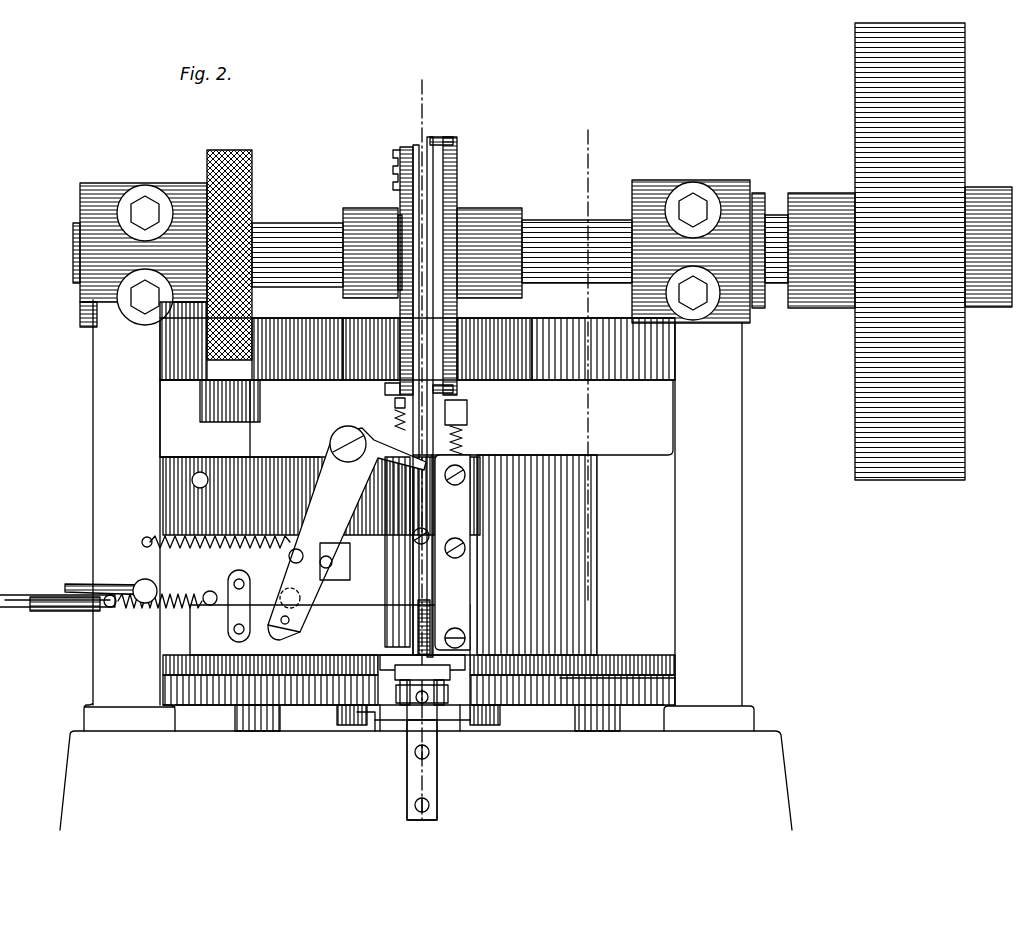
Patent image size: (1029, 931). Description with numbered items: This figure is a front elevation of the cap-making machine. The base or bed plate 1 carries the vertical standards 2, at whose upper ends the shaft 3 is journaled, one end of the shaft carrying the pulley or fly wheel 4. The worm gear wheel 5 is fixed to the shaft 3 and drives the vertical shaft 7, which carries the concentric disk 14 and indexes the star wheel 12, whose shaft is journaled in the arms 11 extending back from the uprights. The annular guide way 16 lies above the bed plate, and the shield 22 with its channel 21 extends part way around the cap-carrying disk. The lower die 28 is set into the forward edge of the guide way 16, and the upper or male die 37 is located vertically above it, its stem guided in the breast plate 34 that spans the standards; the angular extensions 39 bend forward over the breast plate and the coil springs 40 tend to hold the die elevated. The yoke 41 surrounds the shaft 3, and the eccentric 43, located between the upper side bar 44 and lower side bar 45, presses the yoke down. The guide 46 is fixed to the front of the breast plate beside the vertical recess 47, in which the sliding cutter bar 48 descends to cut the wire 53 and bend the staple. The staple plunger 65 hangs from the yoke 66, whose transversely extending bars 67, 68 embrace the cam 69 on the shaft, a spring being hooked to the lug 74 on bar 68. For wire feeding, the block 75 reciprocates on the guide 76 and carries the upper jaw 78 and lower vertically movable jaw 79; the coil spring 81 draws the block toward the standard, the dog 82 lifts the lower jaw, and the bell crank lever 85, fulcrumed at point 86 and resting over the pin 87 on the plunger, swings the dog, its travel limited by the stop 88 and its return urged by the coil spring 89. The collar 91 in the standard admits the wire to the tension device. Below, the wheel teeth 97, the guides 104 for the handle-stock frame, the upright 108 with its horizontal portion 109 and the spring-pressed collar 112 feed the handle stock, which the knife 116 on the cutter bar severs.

The base or bed plate 1 is at (745, 748).
The vertical standards 2 is at (100, 520).
The shaft 3 is at (605, 220).
The pulley or fly wheel 4 is at (862, 143).
The worm gear wheel 5 is at (232, 150).
The vertical shaft 7 is at (215, 445).
The arms 11 is at (417, 349).
The star wheel 12 is at (505, 662).
The concentric disk 14 is at (163, 670).
The annular guide way 16 is at (660, 692).
The channel 21 is at (607, 675).
The shield 22 is at (652, 675).
The lower die 28 is at (470, 712).
The breast plate 34 is at (275, 466).
The upper or male die 37 is at (395, 660).
The angular extensions 39 is at (470, 412).
The coil springs 40 is at (468, 437).
The yoke 41 is at (440, 218).
The eccentric 43 is at (438, 322).
The upper side bar 44 is at (453, 148).
The lower side bar 45 is at (458, 388).
The guide 46 is at (452, 552).
The vertical recess 47 is at (393, 552).
The cutter bar 48 is at (410, 612).
The wire 53 is at (10, 603).
The staple plunger 65 is at (413, 570).
The yoke 66 is at (410, 309).
The transversely extending bar 67 is at (385, 388).
The transversely extending bar 68 is at (400, 162).
The cam 69 is at (395, 200).
The lug 74 is at (398, 150).
The block 75 is at (330, 630).
The guide 76 is at (335, 561).
The upper jaw 78 is at (300, 597).
The lower vertically movable jaw 79 is at (301, 620).
The coil spring 81 is at (203, 606).
The dog 82 is at (289, 636).
The bell crank lever 85 is at (347, 530).
The fulcrum point 86 is at (342, 428).
The pin 87 is at (428, 534).
The stop 88 is at (258, 600).
The coil spring 89 is at (240, 565).
The collar 91 is at (60, 611).
The teeth 97 is at (355, 728).
The guides 104 is at (382, 728).
The upright 108 is at (440, 754).
The horizontal portion 109 is at (422, 695).
The collar 112 is at (445, 689).
The knife 116 is at (438, 640).